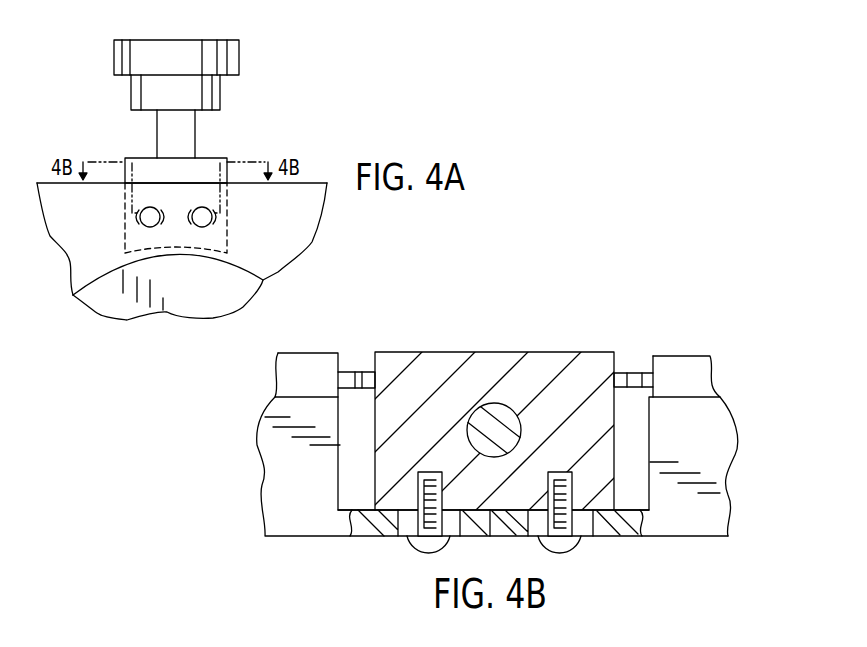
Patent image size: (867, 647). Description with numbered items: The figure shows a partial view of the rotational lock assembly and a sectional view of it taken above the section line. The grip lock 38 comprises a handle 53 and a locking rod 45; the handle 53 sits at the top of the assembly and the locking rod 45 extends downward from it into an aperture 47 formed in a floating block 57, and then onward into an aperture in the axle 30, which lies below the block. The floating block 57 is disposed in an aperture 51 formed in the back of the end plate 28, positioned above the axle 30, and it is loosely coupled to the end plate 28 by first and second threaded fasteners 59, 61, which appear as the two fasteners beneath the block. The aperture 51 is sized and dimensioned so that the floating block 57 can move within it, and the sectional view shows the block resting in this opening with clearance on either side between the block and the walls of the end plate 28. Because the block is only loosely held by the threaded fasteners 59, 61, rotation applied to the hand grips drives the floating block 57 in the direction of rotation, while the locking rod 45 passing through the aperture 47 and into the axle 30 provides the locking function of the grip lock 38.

In FIG. 4B, the end plate 28 is at (705, 438).
In FIG. 4A, the axle 30 is at (112, 322).
In FIG. 4A, the grip lock 38 is at (104, 88).
In FIG. 4A, the locking rod 45 is at (197, 134).
In FIG. 4B, the aperture 47 is at (497, 403).
In FIG. 4B, the aperture 51 is at (353, 398).
In FIG. 4A, the handle 53 is at (240, 58).
In FIG. 4A, the floating block 57 is at (215, 158).
In FIG. 4B, the floating block 57 is at (436, 350).
In FIG. 4A, the first threaded fastener 59 is at (148, 227).
In FIG. 4B, the first threaded fastener 59 is at (410, 548).
In FIG. 4A, the second threaded fastener 61 is at (204, 227).
In FIG. 4B, the second threaded fastener 61 is at (578, 548).